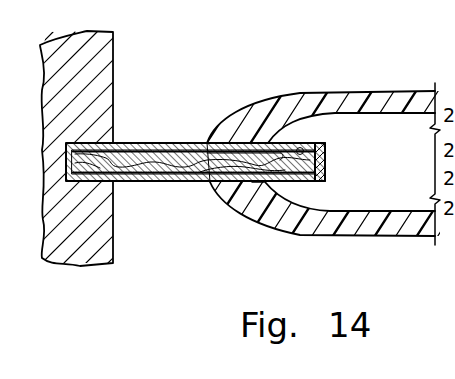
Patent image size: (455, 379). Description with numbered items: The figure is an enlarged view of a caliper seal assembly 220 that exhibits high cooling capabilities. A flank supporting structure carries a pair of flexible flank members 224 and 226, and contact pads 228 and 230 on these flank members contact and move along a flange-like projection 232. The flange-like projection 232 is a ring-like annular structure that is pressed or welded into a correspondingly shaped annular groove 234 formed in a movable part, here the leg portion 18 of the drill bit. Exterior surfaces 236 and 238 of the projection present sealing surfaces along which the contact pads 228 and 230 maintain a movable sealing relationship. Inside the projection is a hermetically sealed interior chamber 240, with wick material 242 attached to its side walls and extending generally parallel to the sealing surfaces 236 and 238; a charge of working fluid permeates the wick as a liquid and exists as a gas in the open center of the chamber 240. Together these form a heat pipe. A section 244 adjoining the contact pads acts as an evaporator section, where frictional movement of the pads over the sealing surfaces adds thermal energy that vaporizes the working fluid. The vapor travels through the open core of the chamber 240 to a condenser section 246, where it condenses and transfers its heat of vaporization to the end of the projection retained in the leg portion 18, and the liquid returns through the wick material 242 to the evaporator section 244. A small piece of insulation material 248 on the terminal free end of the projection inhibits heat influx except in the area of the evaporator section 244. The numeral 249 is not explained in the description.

The leg portion 18 is at (107, 41).
The caliper seal assembly 220 is at (234, 237).
The flexible flank member 224 is at (377, 228).
The flexible flank member 226 is at (336, 93).
The contact pad 228 is at (258, 183).
The contact pad 230 is at (247, 143).
The flange-like projection 232 is at (143, 145).
The annular groove 234 is at (88, 178).
The exterior sealing surface 236 is at (204, 181).
The exterior sealing surface 238 is at (129, 143).
The interior chamber 240 is at (193, 163).
The wick material 242 is at (194, 143).
The evaporator section 244 is at (296, 182).
The condenser section 246 is at (178, 181).
The insulation material 248 is at (328, 158).
The region 249 is at (412, 201).